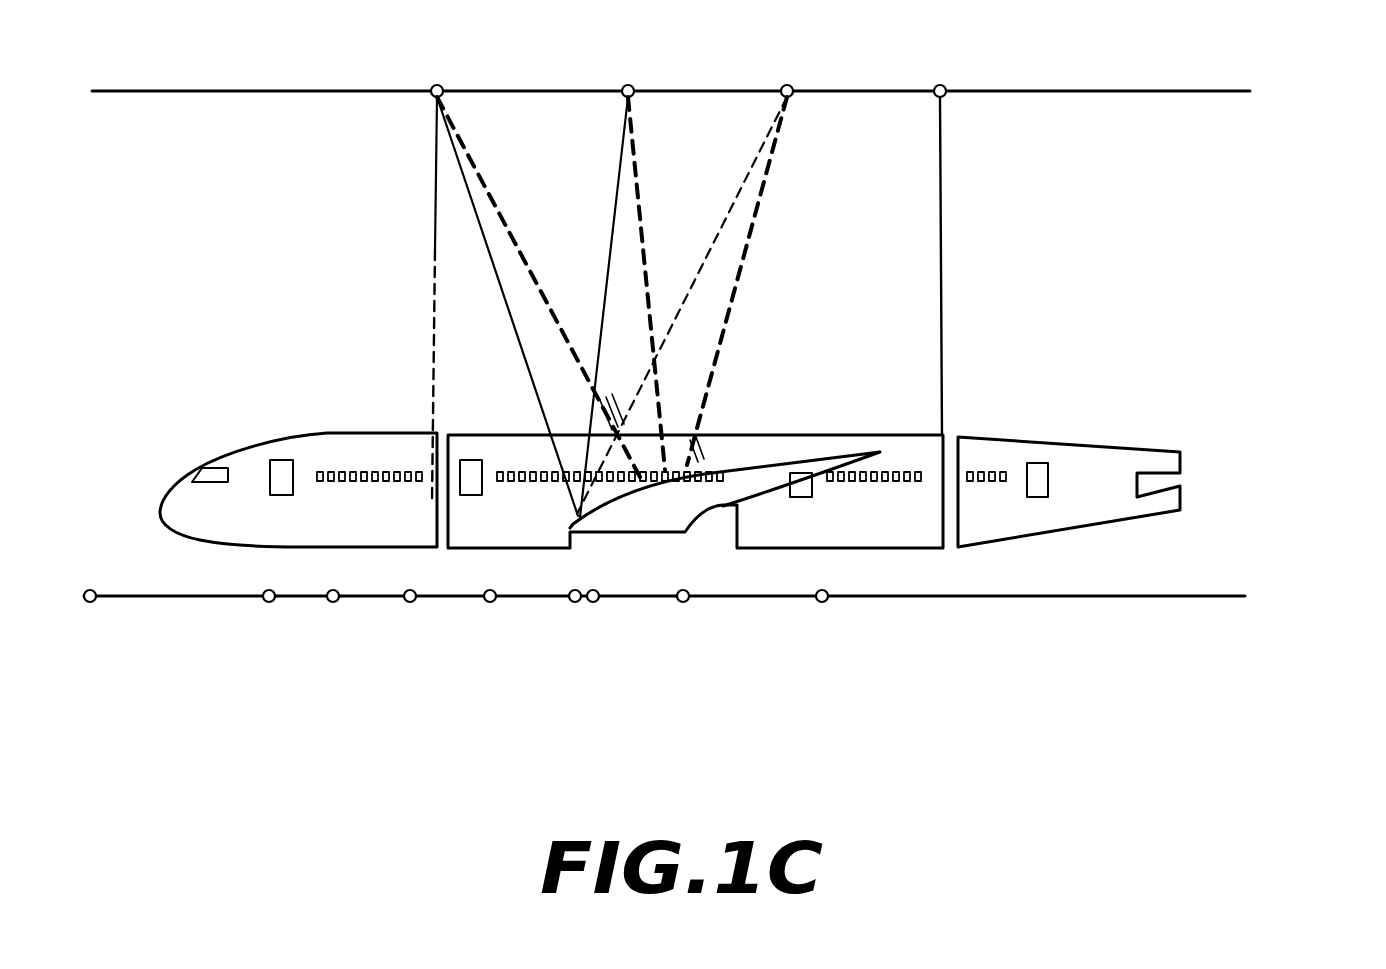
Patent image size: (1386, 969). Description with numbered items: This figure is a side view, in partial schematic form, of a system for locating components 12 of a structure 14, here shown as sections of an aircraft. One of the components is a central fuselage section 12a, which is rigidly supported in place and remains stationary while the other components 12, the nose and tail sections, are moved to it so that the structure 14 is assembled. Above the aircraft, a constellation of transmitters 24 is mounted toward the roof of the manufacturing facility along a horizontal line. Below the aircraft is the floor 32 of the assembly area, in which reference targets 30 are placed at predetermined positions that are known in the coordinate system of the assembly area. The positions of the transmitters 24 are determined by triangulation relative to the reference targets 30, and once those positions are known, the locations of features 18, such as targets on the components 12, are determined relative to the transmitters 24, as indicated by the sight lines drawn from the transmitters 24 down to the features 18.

The components 12 is at (250, 458).
The central fuselage section 12a is at (875, 527).
The structure 14 is at (268, 266).
The features 18 is at (432, 502).
The transmitters 24 is at (436, 85).
The reference targets 30 is at (90, 602).
The floor 32 is at (1262, 597).